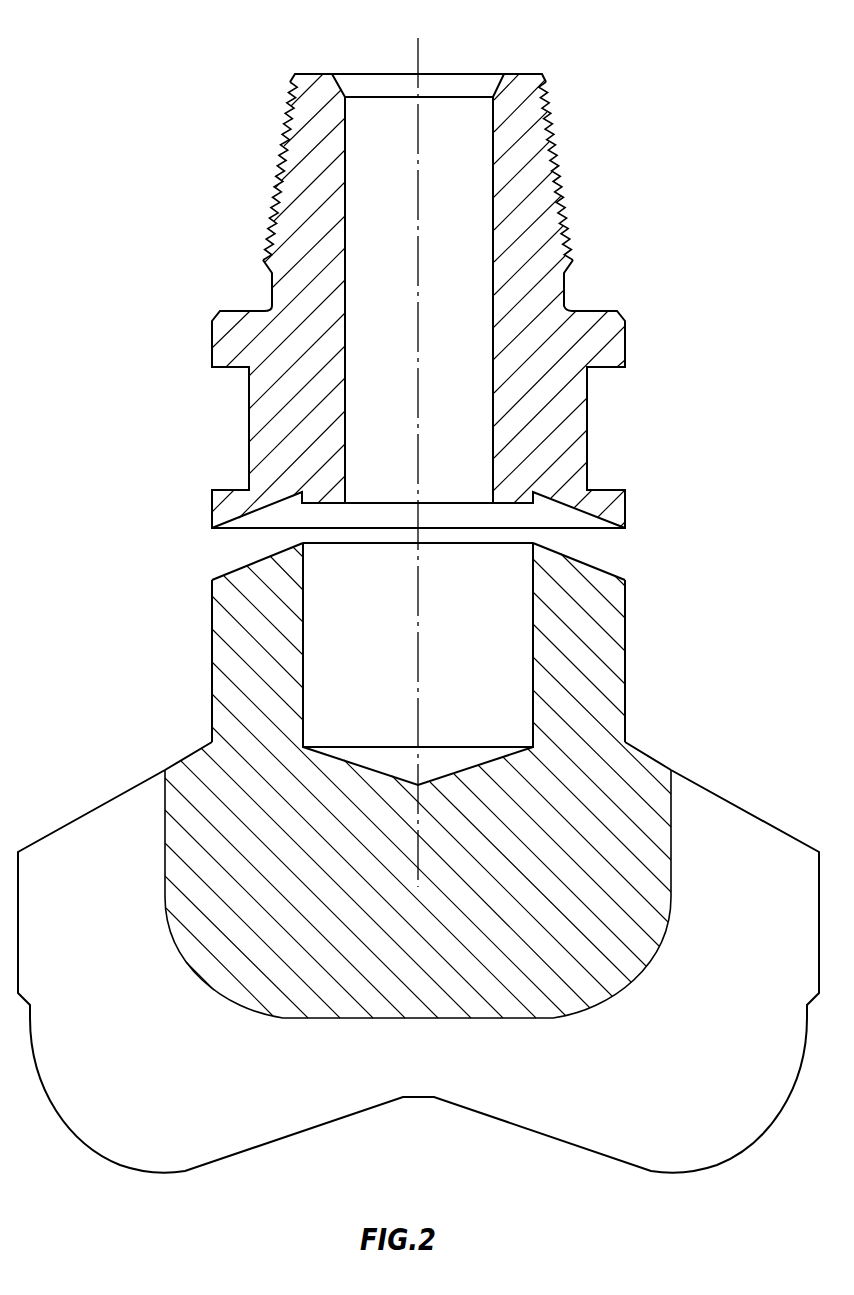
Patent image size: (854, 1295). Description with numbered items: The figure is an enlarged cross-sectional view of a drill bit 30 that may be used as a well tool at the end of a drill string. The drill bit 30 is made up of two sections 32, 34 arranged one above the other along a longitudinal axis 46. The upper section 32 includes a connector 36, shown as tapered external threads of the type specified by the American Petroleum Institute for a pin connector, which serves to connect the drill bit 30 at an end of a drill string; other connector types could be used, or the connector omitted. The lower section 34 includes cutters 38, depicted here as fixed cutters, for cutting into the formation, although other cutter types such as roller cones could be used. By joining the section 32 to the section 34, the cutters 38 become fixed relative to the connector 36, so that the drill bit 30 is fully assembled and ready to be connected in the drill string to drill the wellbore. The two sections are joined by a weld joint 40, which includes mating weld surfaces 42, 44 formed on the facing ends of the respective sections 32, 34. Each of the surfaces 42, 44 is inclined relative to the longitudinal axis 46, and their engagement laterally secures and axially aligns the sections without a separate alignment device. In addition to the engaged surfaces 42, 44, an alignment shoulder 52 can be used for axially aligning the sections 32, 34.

The drill bit 30 is at (714, 86).
The section 32 is at (208, 342).
The section 34 is at (208, 670).
The connector 36 is at (556, 149).
The cutters 38 is at (128, 1168).
The weld joint 40 is at (618, 552).
The weld surface 42 is at (257, 513).
The weld surface 44 is at (247, 568).
The longitudinal axis 46 is at (419, 54).
The alignment shoulder 52 is at (592, 490).